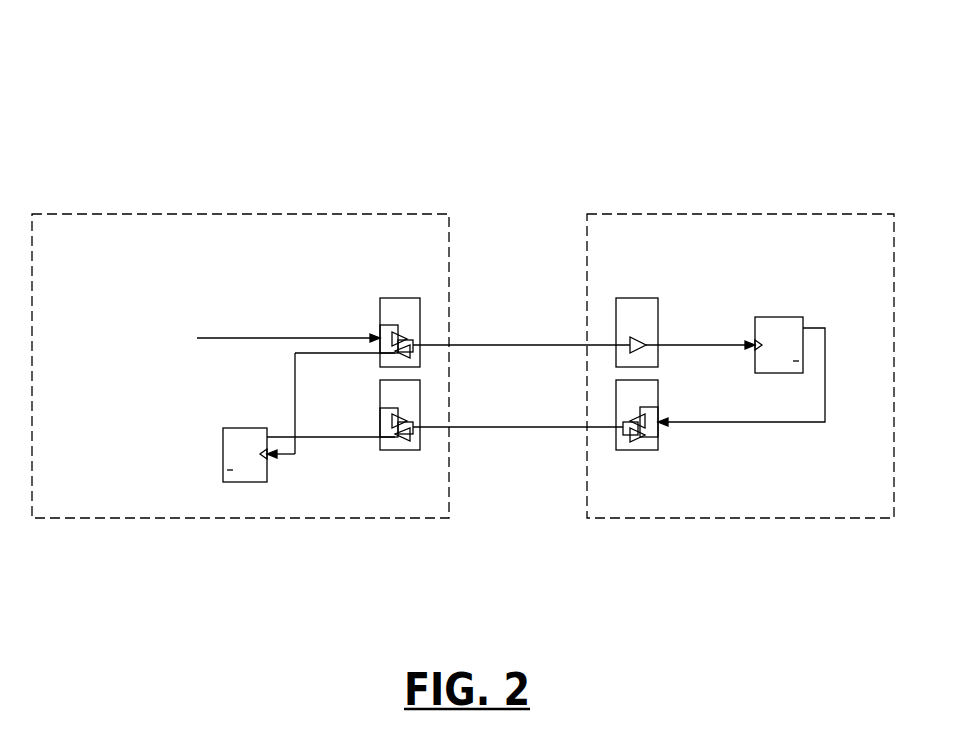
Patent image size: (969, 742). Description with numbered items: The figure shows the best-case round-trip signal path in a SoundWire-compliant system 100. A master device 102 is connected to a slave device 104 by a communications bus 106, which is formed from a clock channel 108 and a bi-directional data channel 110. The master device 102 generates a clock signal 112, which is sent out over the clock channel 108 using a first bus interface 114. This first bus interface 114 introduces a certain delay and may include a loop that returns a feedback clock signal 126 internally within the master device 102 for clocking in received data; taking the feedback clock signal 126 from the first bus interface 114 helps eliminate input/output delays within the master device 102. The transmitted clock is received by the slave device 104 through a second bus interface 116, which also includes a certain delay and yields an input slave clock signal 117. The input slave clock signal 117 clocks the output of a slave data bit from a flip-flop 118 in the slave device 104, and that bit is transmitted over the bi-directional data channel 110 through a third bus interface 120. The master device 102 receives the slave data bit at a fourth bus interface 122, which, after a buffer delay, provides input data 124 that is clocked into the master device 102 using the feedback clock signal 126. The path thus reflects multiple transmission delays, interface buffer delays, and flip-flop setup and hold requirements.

The SoundWire-compliant system 100 is at (497, 60).
The master device 102 is at (213, 214).
The slave device 104 is at (644, 214).
The communications bus 106 is at (497, 214).
The clock channel 108 is at (562, 343).
The bi-directional data channel 110 is at (547, 430).
The clock signal 112 is at (233, 338).
The first bus interface 114 is at (413, 298).
The second bus interface 116 is at (630, 298).
The input slave clock signal 117 is at (677, 347).
The slave flip-flop 118 is at (763, 317).
The third bus interface 120 is at (633, 450).
The fourth bus interface 122 is at (408, 450).
The input data 124 is at (313, 438).
The feedback clock signal 126 is at (295, 379).